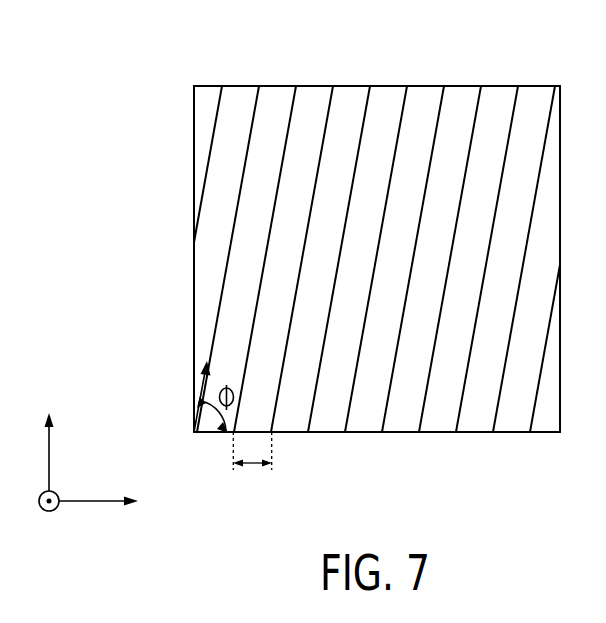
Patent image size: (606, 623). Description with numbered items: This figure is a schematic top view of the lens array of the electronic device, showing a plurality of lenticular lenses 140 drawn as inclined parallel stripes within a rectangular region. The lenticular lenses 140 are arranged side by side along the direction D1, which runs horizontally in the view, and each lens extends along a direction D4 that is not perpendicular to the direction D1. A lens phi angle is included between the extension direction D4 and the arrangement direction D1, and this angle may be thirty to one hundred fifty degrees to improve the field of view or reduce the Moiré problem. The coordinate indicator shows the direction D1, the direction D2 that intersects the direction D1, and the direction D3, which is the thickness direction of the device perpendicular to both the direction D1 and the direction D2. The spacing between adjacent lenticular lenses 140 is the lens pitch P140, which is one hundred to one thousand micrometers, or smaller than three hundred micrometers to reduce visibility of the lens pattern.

The lenticular lenses 140 is at (208, 103).
The lens pitch P140 is at (254, 469).
The direction D1 is at (117, 503).
The direction D2 is at (49, 435).
The direction D3 is at (32, 519).
The direction D4 is at (184, 396).